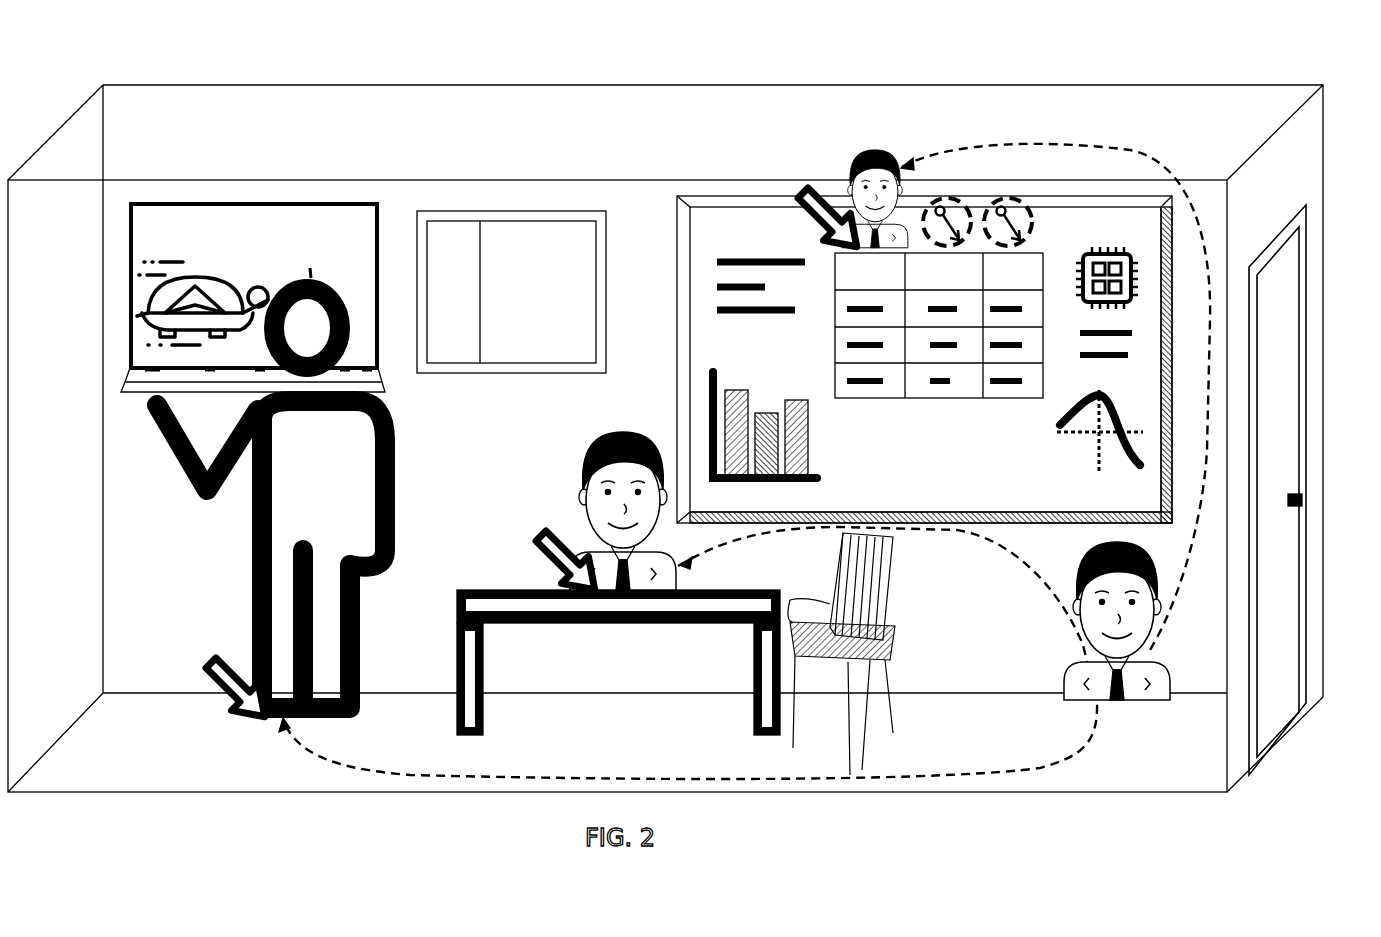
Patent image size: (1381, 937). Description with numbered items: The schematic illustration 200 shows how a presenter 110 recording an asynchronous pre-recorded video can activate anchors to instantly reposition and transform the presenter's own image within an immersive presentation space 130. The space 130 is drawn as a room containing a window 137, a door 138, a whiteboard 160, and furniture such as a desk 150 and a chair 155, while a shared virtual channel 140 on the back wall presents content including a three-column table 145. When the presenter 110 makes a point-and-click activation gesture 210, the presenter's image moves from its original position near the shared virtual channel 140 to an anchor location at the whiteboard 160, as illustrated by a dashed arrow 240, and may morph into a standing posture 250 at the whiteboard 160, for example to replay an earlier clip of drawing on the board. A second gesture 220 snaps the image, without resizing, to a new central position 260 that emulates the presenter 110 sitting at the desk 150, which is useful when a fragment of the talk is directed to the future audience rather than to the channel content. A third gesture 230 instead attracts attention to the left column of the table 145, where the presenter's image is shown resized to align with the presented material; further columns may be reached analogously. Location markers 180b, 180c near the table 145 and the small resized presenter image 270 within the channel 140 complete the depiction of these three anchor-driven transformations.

The presenter 110 is at (1083, 648).
The immersive presentation space 130 is at (447, 438).
The window 137 is at (539, 283).
The door 138 is at (1292, 435).
The shared virtual channel 140 is at (789, 363).
The three-column table 145 is at (832, 262).
The desk 150 is at (512, 585).
The furniture 155 is at (884, 642).
The whiteboard 160 is at (363, 266).
The location sensor icon 180b is at (948, 196).
The location sensor icon 180c is at (1012, 194).
The schematic illustration 200 is at (1364, 116).
The activation gesture 210 is at (213, 662).
The gesture 220 is at (548, 533).
The gesture 230 is at (818, 192).
The dashed arrow 240 is at (623, 778).
The standing posture 250 is at (256, 590).
The new position 260 is at (595, 455).
The remote participant on display 270 is at (867, 150).